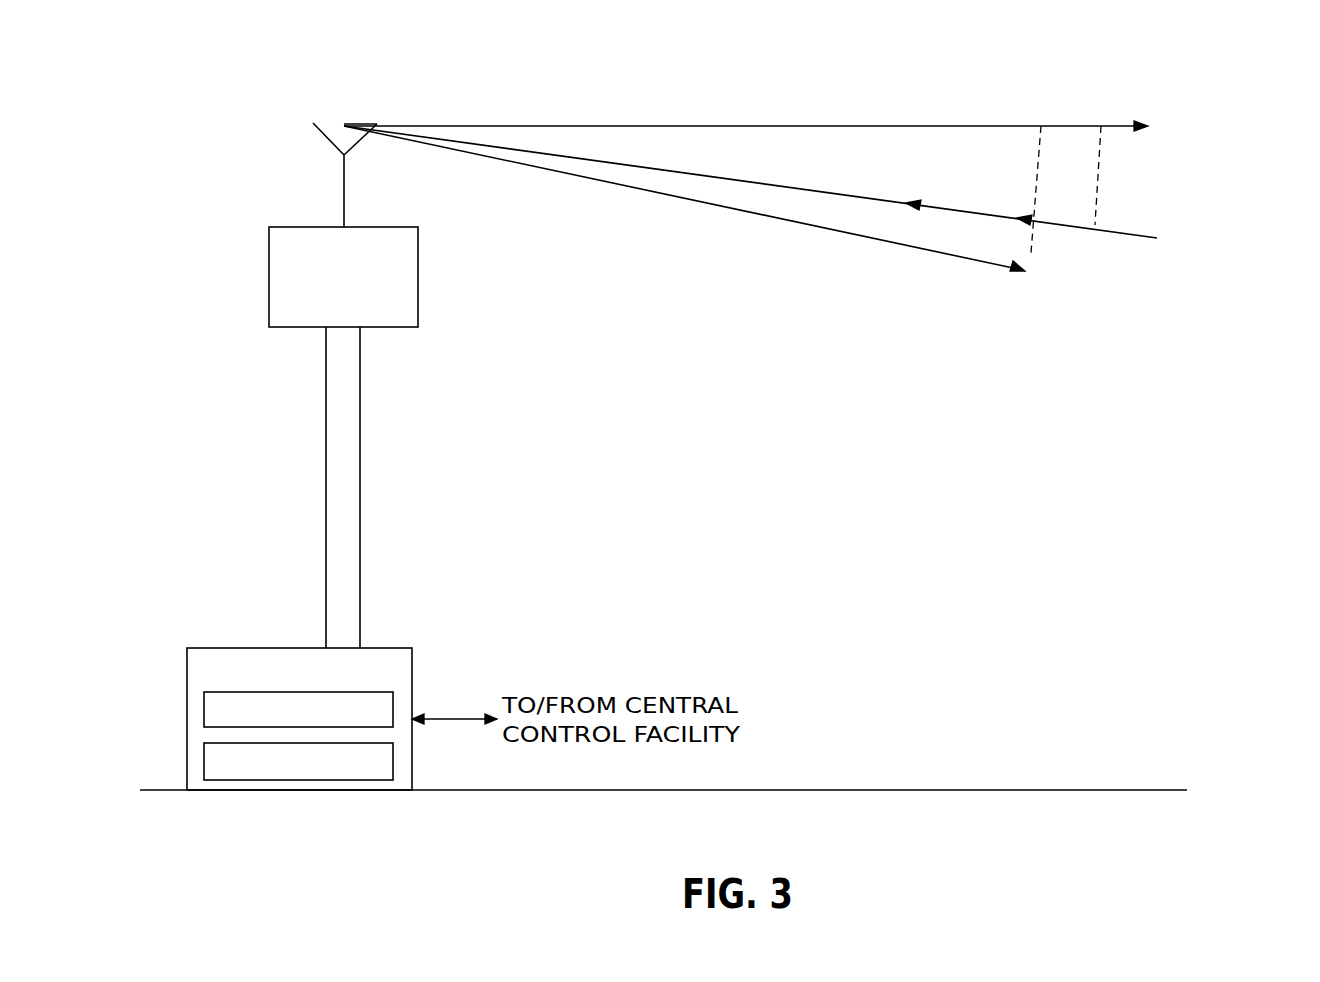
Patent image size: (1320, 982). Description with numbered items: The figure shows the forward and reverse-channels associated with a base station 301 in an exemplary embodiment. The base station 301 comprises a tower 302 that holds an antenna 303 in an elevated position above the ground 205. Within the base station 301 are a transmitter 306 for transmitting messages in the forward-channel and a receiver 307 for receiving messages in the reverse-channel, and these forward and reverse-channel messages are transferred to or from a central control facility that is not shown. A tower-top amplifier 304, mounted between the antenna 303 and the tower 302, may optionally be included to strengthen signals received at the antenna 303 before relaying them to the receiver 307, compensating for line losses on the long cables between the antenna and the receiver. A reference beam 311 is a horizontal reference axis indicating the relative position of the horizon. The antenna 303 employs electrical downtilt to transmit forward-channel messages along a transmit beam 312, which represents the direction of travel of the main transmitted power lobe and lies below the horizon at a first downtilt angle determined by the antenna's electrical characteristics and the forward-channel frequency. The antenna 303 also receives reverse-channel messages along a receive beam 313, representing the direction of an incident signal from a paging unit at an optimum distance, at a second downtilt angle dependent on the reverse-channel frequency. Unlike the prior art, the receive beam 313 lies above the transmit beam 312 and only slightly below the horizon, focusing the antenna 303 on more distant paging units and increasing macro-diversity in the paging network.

The ground 205 is at (917, 789).
The base station 301 is at (243, 648).
The tower 302 is at (362, 438).
The antenna 303 is at (320, 139).
The tower-top amplifier 304 is at (269, 277).
The transmitter 306 is at (204, 708).
The receiver 307 is at (204, 760).
The reference beam 311 is at (892, 125).
The transmit beam 312 is at (718, 205).
The receive beam 313 is at (868, 197).